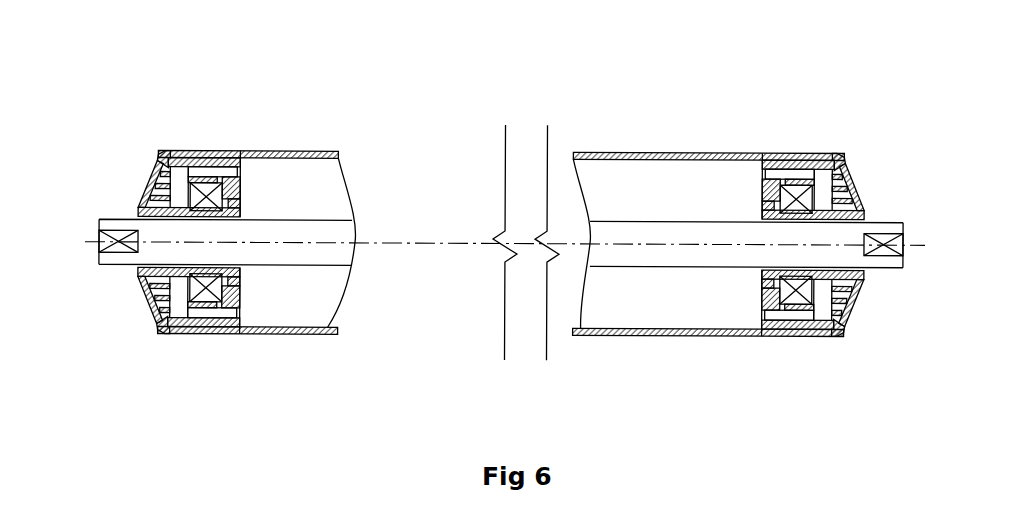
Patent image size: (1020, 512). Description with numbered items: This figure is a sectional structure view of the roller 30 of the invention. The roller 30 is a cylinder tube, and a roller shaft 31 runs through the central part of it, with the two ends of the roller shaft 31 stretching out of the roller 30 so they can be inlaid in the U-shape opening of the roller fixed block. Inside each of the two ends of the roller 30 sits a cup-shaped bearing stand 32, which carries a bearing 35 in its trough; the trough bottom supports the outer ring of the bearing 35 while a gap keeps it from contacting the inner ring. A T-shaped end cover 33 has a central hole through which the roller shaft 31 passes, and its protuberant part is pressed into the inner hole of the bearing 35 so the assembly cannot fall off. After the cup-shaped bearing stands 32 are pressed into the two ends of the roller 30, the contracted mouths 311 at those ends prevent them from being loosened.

The roller 30 is at (383, 175).
The roller shaft 31 is at (178, 233).
The contracted mouths 311 is at (173, 150).
The bearing stand 32 is at (170, 330).
The end cover 33 is at (203, 330).
The bearing 35 is at (240, 181).